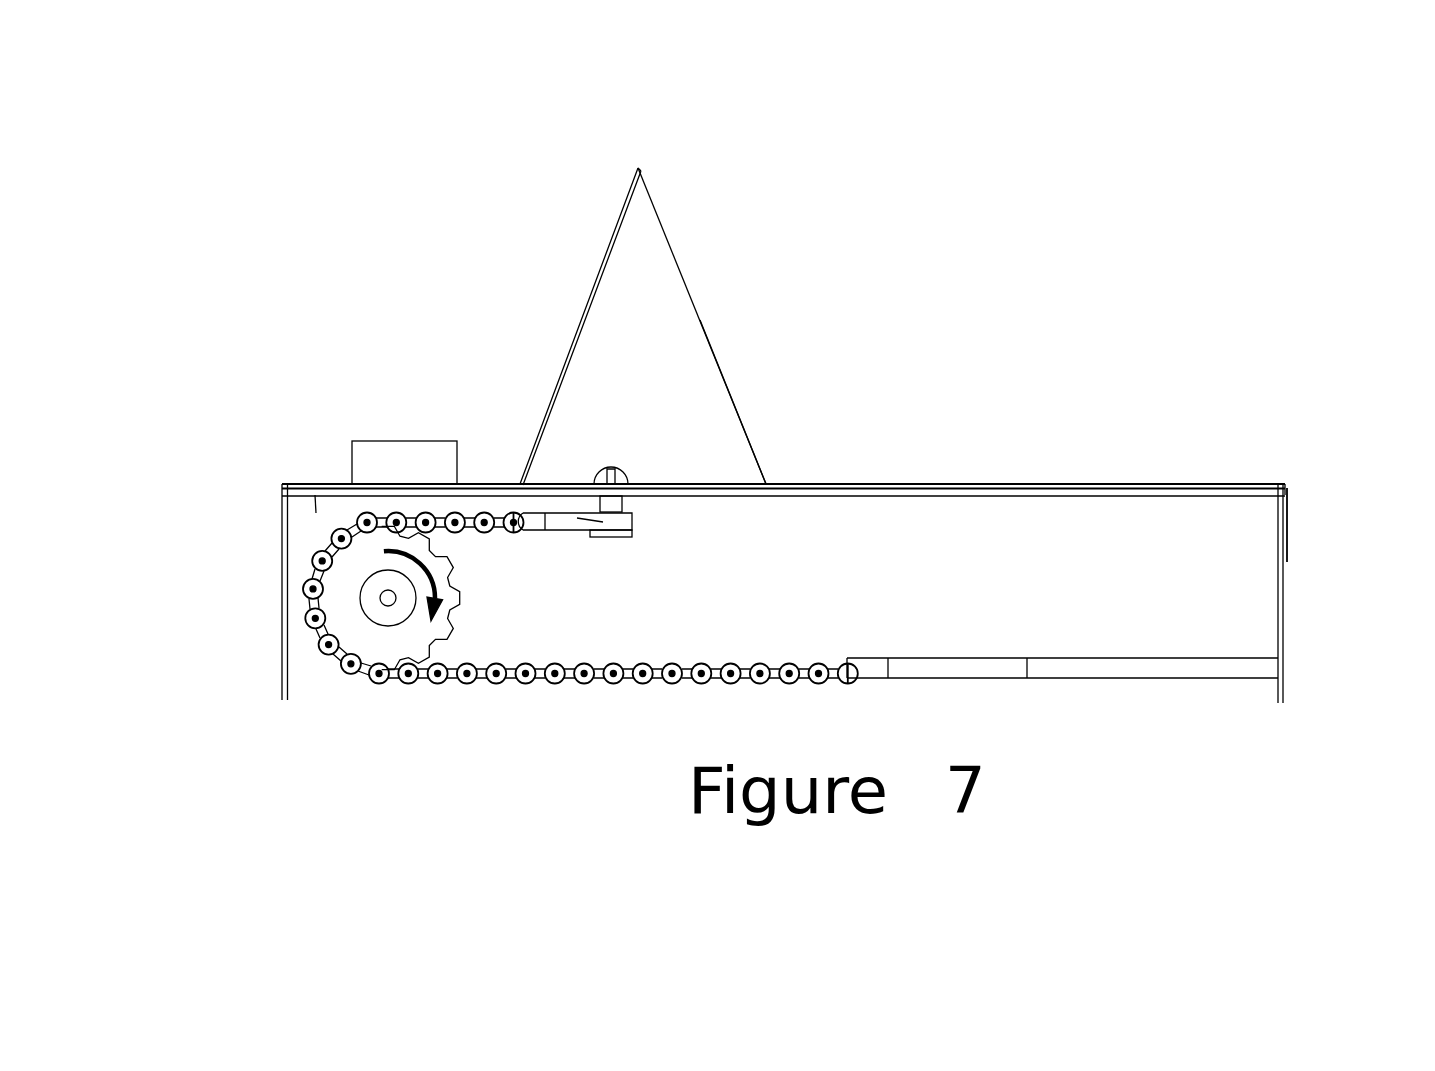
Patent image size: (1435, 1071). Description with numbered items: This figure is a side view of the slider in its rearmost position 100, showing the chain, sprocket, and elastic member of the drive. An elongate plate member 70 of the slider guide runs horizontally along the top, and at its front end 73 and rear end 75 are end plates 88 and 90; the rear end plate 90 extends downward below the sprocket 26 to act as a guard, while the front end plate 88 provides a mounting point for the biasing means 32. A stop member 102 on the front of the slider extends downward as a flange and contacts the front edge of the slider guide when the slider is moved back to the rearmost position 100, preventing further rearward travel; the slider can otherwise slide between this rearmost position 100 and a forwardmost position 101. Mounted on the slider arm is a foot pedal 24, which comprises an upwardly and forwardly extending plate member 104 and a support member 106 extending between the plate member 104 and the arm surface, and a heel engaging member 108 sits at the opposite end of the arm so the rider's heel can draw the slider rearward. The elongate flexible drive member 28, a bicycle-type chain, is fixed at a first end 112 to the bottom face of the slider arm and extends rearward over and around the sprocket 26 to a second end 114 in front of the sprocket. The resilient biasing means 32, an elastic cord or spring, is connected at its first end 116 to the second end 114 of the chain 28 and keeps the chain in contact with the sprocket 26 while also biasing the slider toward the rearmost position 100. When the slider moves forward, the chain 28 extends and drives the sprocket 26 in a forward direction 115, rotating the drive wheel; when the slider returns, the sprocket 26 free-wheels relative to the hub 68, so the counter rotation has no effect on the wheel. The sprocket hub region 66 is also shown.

The foot pedal 24 is at (676, 307).
The sprocket 26 is at (413, 645).
The elongate flexible drive member 28 is at (495, 531).
The resilient biasing means 32 is at (1155, 623).
The sprocket hub 66 is at (400, 608).
The hub 68 is at (372, 592).
The elongate plate member 70 is at (284, 485).
The front end 73 is at (1260, 496).
The rear end 75 is at (316, 513).
The front end plate 88 is at (280, 633).
The rear end plate 90 is at (1280, 620).
The rearmost position 100 is at (776, 396).
The forwardmost position 101 is at (960, 415).
The stop member 102 is at (1287, 530).
The plate member 104 is at (611, 237).
The support member 106 is at (695, 312).
The heel engaging member 108 is at (367, 455).
The first end 112 is at (777, 603).
The second end 114 is at (1062, 658).
The forward direction 115 is at (415, 560).
The first end 116 is at (1030, 615).